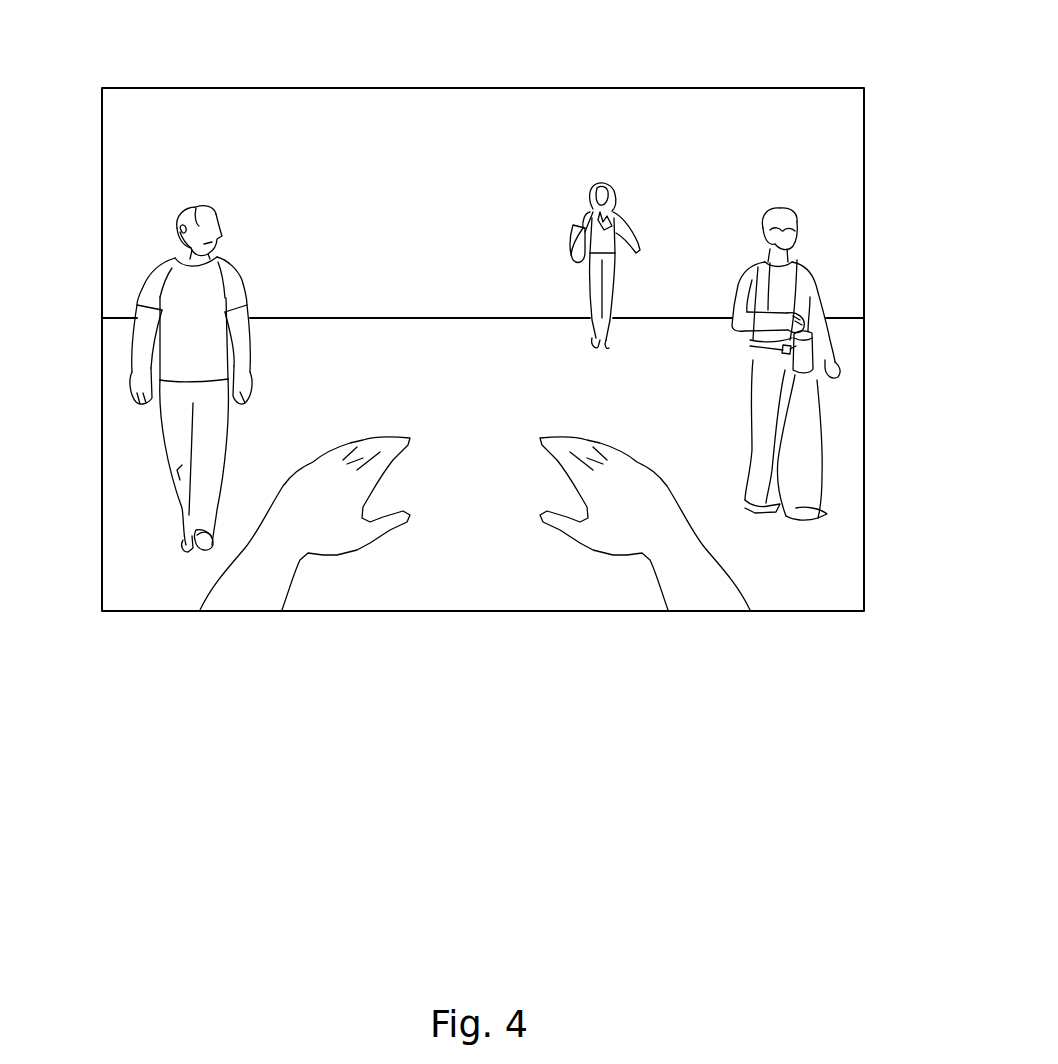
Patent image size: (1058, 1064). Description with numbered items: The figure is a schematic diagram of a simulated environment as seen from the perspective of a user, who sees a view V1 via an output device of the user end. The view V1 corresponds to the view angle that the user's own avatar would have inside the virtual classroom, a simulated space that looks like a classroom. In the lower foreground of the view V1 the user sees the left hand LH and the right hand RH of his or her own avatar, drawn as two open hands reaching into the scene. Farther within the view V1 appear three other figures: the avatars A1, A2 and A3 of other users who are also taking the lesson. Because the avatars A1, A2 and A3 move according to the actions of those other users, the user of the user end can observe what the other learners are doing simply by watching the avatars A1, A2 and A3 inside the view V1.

The view V1 is at (718, 88).
The avatar A1 is at (176, 214).
The avatar A2 is at (604, 183).
The avatar A3 is at (784, 218).
The left hand LH is at (338, 540).
The right hand RH is at (593, 540).